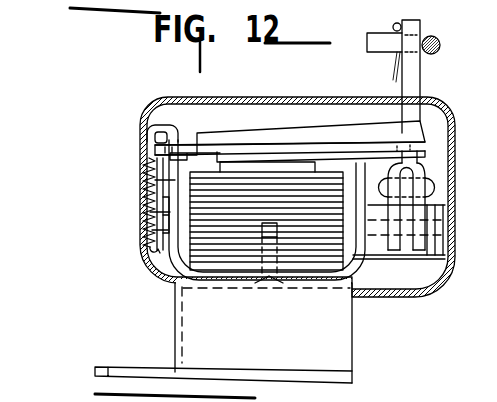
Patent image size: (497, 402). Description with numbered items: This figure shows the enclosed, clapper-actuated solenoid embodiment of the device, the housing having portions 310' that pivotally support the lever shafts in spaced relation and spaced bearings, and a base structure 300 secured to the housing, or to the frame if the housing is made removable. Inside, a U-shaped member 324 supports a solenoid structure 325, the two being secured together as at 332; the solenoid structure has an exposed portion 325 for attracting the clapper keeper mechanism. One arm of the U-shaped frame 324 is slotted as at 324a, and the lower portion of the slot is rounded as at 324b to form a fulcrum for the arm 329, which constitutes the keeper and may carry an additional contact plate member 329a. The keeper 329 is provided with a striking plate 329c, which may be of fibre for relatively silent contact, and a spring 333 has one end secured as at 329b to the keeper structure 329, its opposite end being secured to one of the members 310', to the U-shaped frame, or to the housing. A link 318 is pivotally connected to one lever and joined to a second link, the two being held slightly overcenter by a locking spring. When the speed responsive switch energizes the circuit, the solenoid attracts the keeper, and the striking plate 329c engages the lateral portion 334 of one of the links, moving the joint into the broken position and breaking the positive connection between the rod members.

The base structure 300 is at (340, 350).
The portions 310' is at (293, 199).
The link 318 is at (448, 204).
The U-shaped member 324 is at (173, 178).
The slot 324a is at (167, 125).
The rounded lower portion of slot 324b is at (143, 165).
The solenoid structure 325 is at (250, 165).
The arm 329 is at (357, 142).
The contact plate member 329a is at (315, 147).
The spring securing point 329b is at (160, 126).
The striking plate 329c is at (428, 148).
The securing point 332 is at (247, 291).
The spring 333 is at (140, 212).
The lateral portion 334 is at (427, 162).